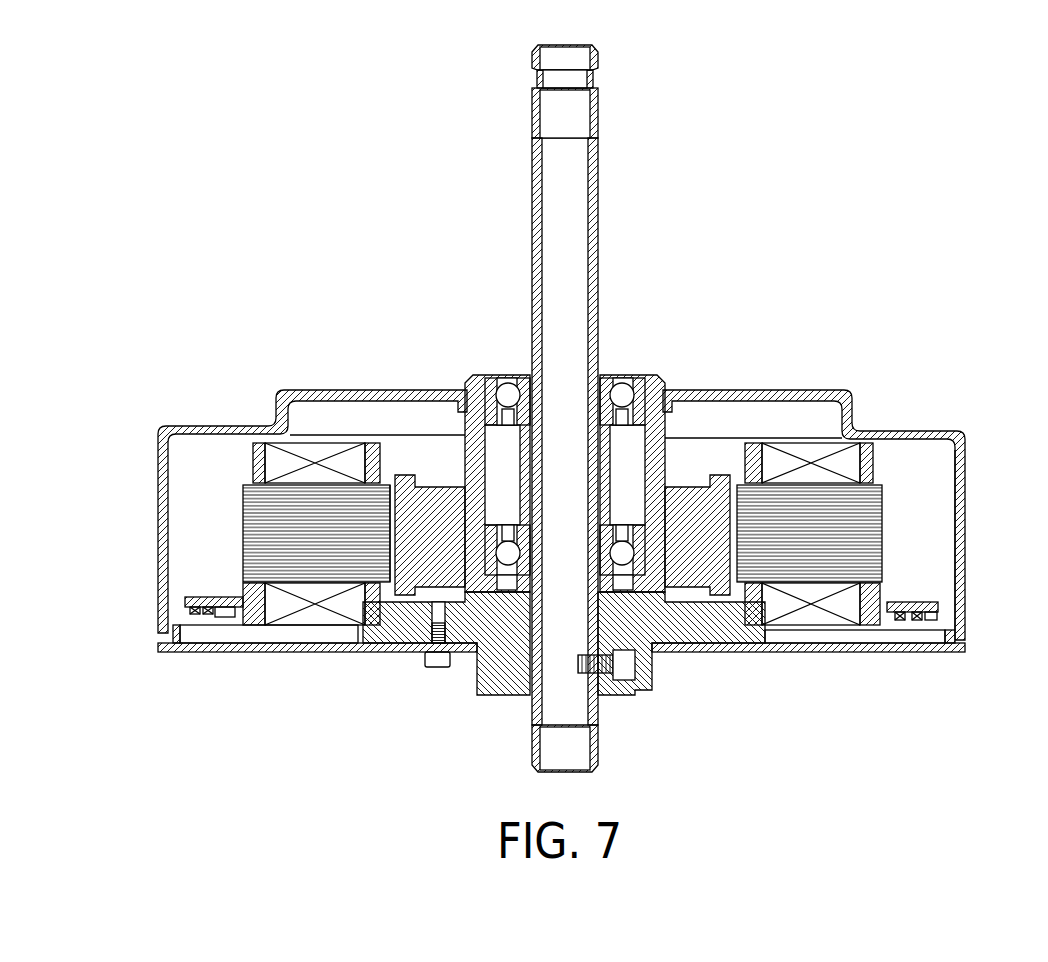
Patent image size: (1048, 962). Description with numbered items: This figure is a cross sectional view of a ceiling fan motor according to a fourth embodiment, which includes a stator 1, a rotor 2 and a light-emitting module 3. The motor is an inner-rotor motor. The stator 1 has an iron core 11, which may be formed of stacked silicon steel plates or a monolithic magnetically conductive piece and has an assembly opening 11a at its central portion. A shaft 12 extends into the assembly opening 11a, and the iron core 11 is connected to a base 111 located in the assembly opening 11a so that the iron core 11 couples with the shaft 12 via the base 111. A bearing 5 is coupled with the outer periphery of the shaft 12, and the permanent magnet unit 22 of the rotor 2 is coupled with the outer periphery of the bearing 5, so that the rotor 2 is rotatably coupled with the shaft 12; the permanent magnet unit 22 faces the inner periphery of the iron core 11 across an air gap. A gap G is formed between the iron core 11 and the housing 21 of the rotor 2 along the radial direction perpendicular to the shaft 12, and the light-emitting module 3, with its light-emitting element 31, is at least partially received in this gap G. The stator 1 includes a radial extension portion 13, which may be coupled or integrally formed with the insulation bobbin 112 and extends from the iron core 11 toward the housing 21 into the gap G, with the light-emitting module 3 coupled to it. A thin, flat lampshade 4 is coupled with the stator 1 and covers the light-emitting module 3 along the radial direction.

The stator 1 is at (608, 408).
The iron core 11 is at (810, 515).
The assembly opening 11a is at (394, 460).
The base 111 is at (728, 650).
The insulation bobbin 112 is at (870, 460).
The shaft 12 is at (600, 297).
The radial extension portion 13 is at (930, 605).
The rotor 2 is at (502, 478).
The housing 21 is at (213, 426).
The permanent magnet unit 22 is at (438, 497).
The light-emitting module 3 is at (212, 612).
The sensor 31 is at (930, 617).
The lampshade 4 is at (262, 648).
The bearing 5 is at (493, 385).
The gap G is at (950, 491).